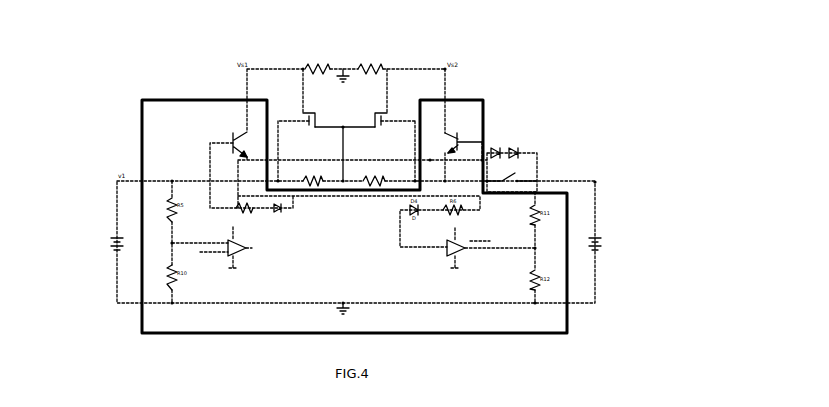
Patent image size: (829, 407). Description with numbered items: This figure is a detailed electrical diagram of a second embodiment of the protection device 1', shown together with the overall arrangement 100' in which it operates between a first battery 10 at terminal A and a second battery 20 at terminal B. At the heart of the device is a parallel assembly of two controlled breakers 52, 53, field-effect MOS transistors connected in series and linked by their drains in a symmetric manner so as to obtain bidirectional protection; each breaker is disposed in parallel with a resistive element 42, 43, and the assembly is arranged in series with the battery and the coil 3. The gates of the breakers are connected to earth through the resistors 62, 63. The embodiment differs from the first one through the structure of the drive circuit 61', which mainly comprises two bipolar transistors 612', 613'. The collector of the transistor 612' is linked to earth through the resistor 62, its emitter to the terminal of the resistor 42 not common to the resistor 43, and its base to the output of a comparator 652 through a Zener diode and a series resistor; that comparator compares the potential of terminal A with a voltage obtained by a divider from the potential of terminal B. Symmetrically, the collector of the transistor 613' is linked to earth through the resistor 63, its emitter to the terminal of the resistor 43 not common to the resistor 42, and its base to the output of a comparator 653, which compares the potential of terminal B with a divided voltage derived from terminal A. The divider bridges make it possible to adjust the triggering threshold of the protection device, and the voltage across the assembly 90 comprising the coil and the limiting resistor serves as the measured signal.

The protection device 1' is at (354, 176).
The power supply device 100' is at (356, 160).
The drive circuit 61' is at (195, 113).
The bipolar transistor 612' is at (466, 111).
The bipolar transistor 613' is at (222, 165).
The resistor 62 is at (375, 66).
The resistor 63 is at (322, 64).
The controlled breaker 52 is at (313, 113).
The controlled breaker 53 is at (377, 113).
The assembly 90 is at (240, 161).
The coil 3 is at (520, 178).
The resistive element 42 is at (372, 184).
The resistive element 43 is at (303, 184).
The first power source 10 is at (108, 243).
The second power source 20 is at (608, 243).
The comparator 652 is at (460, 253).
The comparator 653 is at (240, 257).